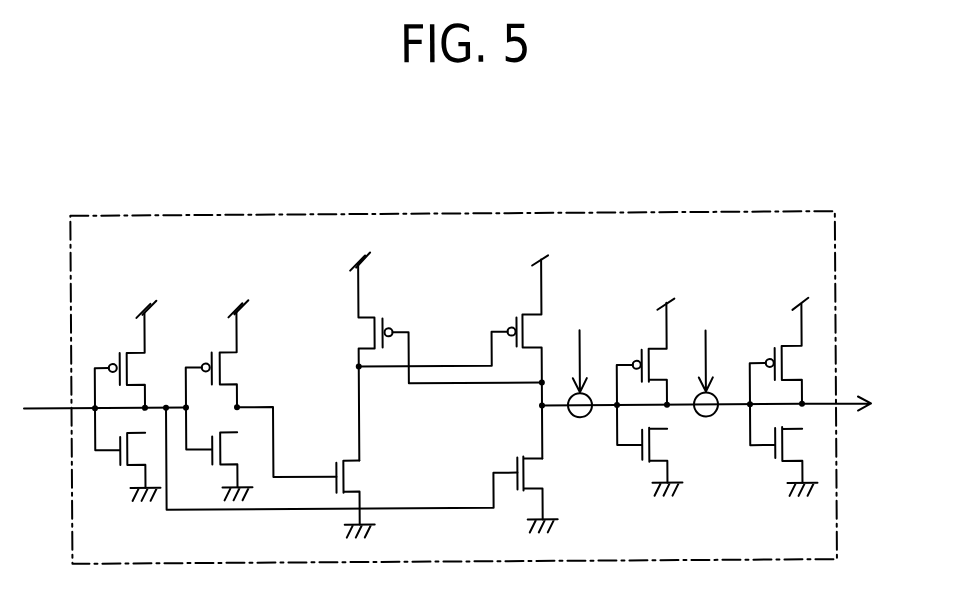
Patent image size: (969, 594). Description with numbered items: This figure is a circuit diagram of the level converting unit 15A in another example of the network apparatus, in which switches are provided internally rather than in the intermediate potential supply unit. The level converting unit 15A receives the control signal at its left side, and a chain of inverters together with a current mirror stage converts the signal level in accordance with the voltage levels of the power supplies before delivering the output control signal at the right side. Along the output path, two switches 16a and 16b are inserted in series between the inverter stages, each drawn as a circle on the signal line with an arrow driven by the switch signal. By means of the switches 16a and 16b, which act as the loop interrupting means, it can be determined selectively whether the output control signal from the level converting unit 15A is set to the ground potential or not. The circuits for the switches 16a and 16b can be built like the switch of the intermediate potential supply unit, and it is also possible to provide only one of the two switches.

The level converting unit 15A is at (280, 213).
The switch 16a is at (580, 418).
The switch 16b is at (706, 418).